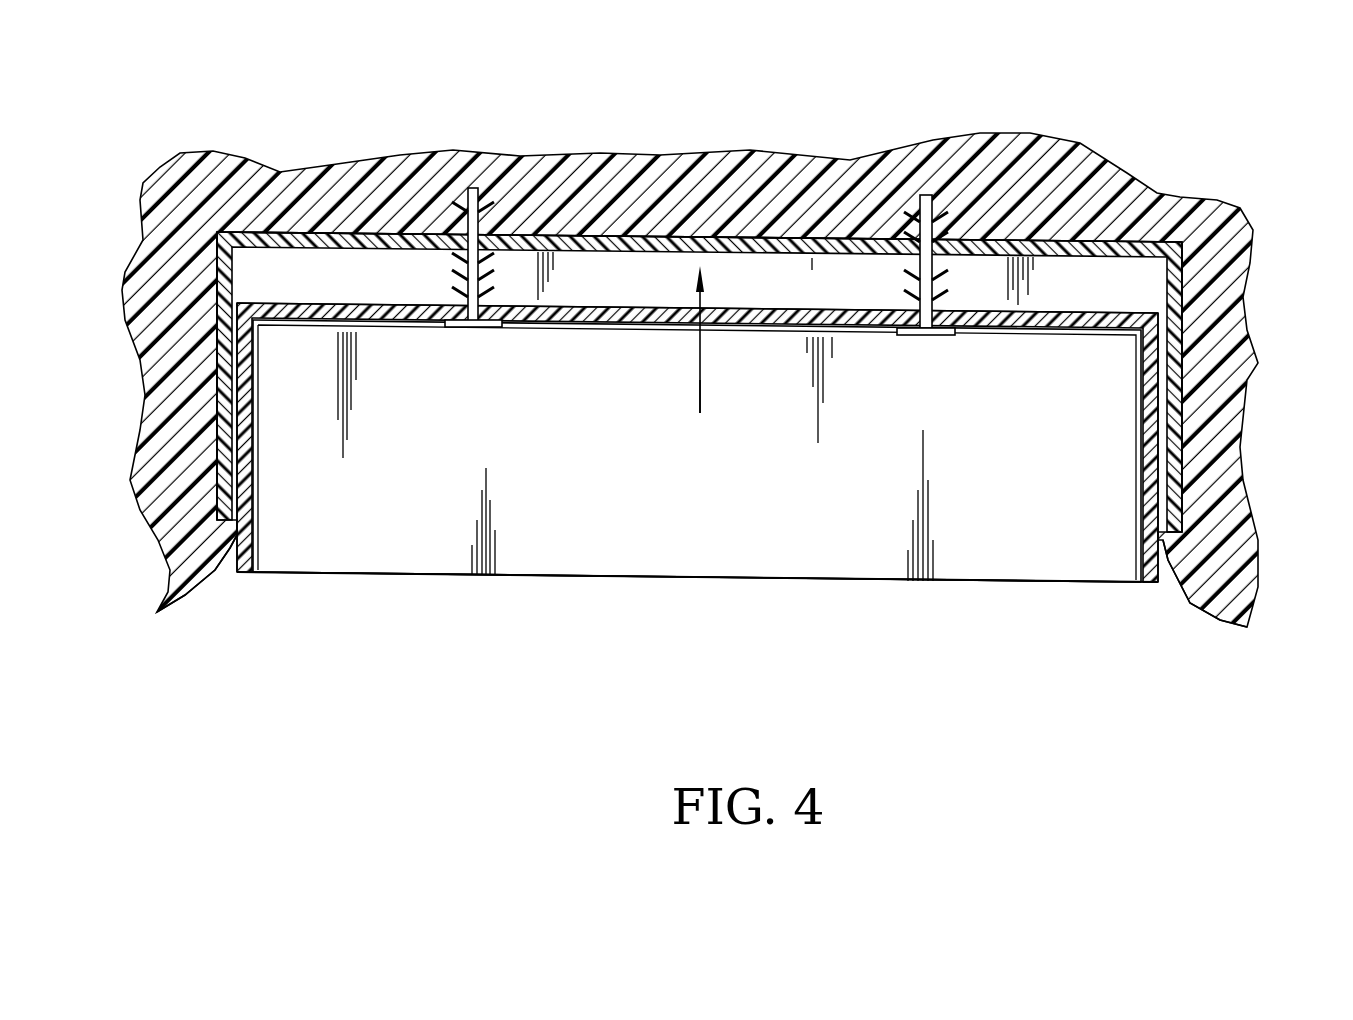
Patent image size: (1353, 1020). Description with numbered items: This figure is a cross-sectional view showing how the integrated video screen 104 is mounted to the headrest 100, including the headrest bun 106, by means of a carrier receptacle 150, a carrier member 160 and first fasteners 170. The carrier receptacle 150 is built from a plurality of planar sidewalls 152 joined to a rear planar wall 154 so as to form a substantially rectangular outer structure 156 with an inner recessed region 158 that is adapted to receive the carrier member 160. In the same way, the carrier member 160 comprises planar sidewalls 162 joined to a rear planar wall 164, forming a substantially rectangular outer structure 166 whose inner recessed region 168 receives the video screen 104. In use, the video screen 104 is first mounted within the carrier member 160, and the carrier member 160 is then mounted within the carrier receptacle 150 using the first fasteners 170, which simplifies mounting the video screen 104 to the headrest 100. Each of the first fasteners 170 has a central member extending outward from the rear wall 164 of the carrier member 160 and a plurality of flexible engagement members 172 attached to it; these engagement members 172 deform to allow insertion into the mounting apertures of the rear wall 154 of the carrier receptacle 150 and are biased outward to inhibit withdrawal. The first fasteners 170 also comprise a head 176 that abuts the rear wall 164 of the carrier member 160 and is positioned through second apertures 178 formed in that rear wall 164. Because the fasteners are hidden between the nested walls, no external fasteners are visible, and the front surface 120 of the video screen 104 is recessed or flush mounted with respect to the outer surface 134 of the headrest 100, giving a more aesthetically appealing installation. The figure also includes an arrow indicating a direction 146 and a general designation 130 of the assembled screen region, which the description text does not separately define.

The headrest 100 is at (166, 119).
The integrated video screen 104 is at (420, 574).
The headrest bun 106 is at (173, 220).
The front surface 120 is at (767, 576).
The display housing 130 is at (882, 672).
The outer surface 134 is at (203, 593).
The air flow direction 146 is at (700, 383).
The carrier receptacle 150 is at (1135, 245).
The planar sidewalls 152 is at (215, 400).
The rear planar wall 154 is at (337, 245).
The substantially rectangular outer structure 156 is at (1170, 517).
The inner recessed region 158 is at (812, 270).
The carrier member 160 is at (655, 312).
The planar sidewalls 162 is at (247, 420).
The rear planar wall 164 is at (405, 318).
The substantially rectangular outer structure 166 is at (1152, 584).
The inner recessed region 168 is at (1066, 365).
The first fasteners 170 is at (471, 188).
The flexible engagement members 172 is at (952, 200).
The head 176 is at (470, 335).
The second apertures 178 is at (500, 326).